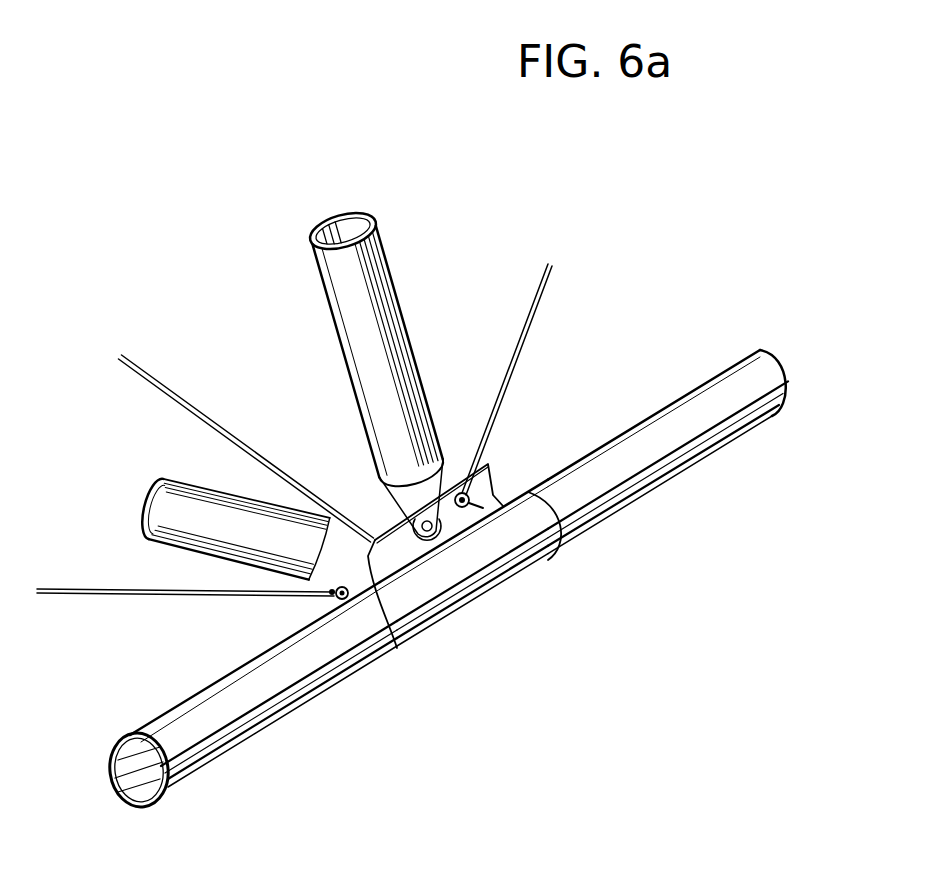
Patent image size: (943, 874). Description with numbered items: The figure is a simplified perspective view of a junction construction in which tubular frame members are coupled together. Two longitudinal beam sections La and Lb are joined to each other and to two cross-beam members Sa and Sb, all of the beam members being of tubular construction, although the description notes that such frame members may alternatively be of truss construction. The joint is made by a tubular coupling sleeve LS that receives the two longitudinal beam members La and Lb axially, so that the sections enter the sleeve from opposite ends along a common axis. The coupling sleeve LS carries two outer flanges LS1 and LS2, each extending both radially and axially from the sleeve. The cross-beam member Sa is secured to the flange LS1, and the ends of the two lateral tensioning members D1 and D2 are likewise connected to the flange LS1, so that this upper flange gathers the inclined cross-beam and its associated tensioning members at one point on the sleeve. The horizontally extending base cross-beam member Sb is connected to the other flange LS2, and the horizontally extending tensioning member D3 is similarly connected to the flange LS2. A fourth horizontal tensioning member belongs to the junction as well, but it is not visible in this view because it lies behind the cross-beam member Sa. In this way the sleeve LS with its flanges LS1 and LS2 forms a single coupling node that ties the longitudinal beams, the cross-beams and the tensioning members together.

The longitudinal beam section La is at (213, 720).
The longitudinal beam section Lb is at (640, 460).
The tubular coupling sleeve LS is at (417, 608).
The outer flange LS1 is at (473, 484).
The outer flange LS2 is at (332, 596).
The cross-beam member Sa is at (365, 317).
The base cross-beam member Sb is at (175, 507).
The lateral tensioning member D1 is at (173, 393).
The lateral tensioning member D2 is at (527, 340).
The horizontal tensioning member D3 is at (42, 593).